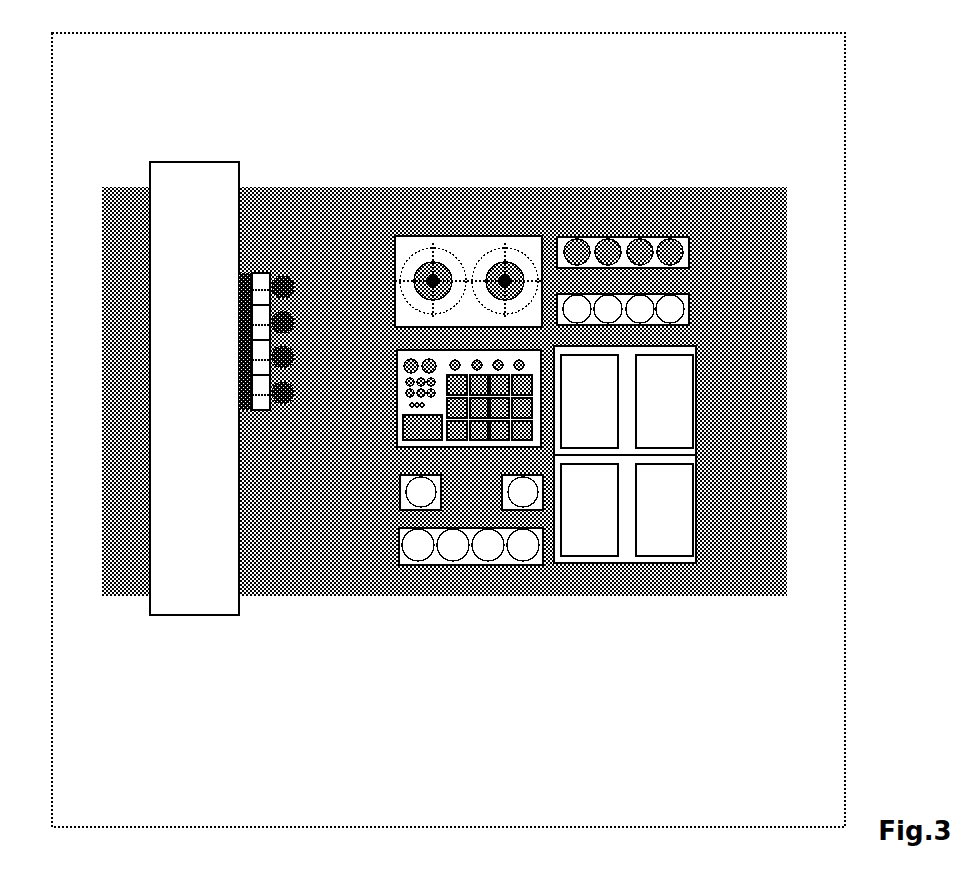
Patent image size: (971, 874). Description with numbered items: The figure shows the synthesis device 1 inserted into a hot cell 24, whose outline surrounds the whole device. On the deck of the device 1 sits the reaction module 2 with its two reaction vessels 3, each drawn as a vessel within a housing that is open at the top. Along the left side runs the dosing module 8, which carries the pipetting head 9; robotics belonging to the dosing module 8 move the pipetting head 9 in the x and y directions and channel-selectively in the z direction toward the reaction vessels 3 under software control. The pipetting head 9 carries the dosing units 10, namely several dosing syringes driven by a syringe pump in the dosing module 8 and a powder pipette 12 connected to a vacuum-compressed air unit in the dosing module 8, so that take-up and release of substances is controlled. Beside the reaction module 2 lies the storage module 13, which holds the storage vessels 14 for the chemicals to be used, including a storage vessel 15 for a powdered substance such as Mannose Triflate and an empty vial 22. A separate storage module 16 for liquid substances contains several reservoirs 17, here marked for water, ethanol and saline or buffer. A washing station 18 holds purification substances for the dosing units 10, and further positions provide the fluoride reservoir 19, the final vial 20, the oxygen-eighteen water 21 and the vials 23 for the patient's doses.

The synthesis device 1 is at (115, 597).
The reaction module 2 is at (401, 250).
The reaction vessel 3 is at (450, 268).
The dosing module 8 is at (187, 585).
The pipetting head 9 is at (258, 405).
The dosing units 10 is at (291, 350).
The powder pipette 12 is at (282, 276).
The storage module 13 is at (400, 447).
The storage vessel 14 is at (403, 382).
The storage vessel for powdered substances 15 is at (403, 418).
The storage module for liquid substances 16 is at (696, 350).
The reservoirs 17 is at (678, 433).
The washing station 18 is at (570, 246).
The fluoride reservoir 19 is at (526, 507).
The final vial 20 is at (436, 563).
The 18O water 21 is at (403, 508).
The empty vial 22 is at (403, 361).
The vials for patient's doses 23 is at (690, 295).
The hot cell 24 is at (847, 523).